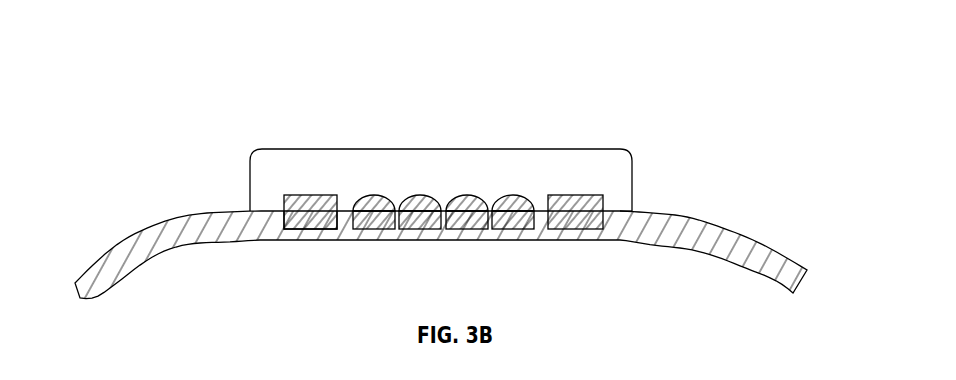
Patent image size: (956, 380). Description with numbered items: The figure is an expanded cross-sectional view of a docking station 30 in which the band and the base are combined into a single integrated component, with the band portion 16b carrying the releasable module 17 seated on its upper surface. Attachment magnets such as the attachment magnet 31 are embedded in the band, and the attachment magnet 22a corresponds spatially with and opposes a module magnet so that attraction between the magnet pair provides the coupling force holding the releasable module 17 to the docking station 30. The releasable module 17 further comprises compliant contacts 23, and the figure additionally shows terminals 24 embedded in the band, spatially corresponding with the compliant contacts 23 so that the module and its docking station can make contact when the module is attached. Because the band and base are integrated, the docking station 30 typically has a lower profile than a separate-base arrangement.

The band / strap portion 16b is at (710, 235).
The releasable module 17 is at (617, 163).
The attachment magnet 22a is at (298, 195).
The compliant contacts 23 is at (519, 195).
The terminals 24 is at (522, 218).
The docking station 30 is at (675, 195).
The attachment magnet 31 is at (300, 229).